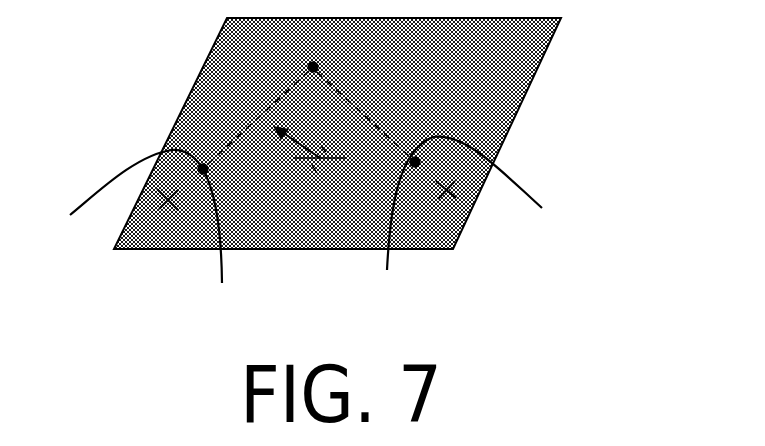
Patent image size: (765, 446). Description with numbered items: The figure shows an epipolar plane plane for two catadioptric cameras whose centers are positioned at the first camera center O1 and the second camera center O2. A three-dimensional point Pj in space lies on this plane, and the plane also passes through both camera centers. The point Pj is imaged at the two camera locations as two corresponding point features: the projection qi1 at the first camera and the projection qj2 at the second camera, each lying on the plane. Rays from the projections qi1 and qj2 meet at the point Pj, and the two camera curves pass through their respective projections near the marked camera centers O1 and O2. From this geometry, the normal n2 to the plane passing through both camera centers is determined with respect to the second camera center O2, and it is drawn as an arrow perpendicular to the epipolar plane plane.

The epipolar plane is at (337, 133).
The 3D point Pj is at (325, 55).
The projection of 3D point at first camera qi1 is at (218, 175).
The projection of 3D point at second camera qj2 is at (428, 154).
The first camera center O1 is at (146, 216).
The second camera center O2 is at (464, 203).
The normal to the plane n2 is at (309, 147).